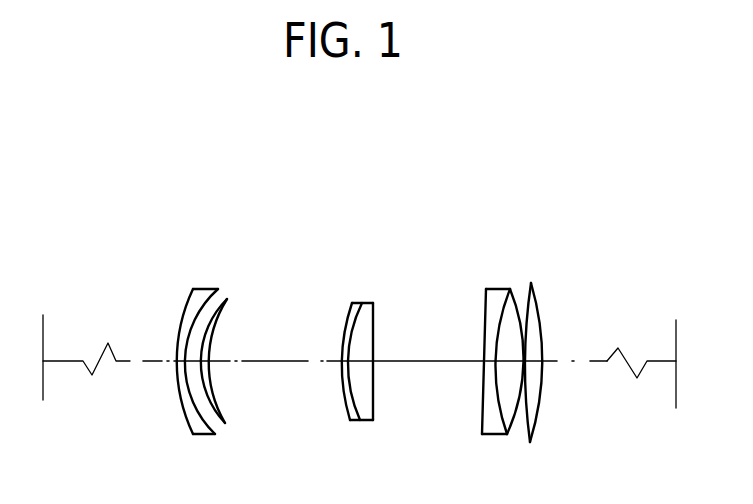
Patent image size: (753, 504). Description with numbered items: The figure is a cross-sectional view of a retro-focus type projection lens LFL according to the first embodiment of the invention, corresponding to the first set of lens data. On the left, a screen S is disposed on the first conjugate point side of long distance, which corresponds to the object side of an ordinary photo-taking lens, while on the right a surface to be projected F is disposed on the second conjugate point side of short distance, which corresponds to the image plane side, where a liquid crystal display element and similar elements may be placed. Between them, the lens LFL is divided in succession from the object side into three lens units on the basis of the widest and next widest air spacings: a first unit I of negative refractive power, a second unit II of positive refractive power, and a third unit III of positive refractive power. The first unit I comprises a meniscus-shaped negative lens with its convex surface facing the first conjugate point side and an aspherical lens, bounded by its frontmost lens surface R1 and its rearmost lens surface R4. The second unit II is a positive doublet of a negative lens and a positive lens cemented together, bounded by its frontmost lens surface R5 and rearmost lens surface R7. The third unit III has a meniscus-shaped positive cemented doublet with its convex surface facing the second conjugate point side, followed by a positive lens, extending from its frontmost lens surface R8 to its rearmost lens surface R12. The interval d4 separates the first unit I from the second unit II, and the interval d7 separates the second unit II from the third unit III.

The screen S is at (44, 337).
The surface to be projected F is at (677, 345).
The retro-focus type lens LFL is at (551, 209).
The first unit I is at (182, 277).
The second unit II is at (385, 277).
The third unit III is at (483, 280).
The frontmost lens surface of the first unit R1 is at (177, 322).
The rearmost lens surface of the first unit R4 is at (226, 304).
The frontmost lens surface of the second unit R5 is at (345, 329).
The rearmost lens surface of the second unit R7 is at (374, 327).
The frontmost lens surface of the third unit R8 is at (485, 312).
The rearmost lens surface of the third unit R12 is at (543, 318).
The interval between the first unit and the second unit d4 is at (343, 362).
The interval between the second unit and the third unit d7 is at (485, 362).